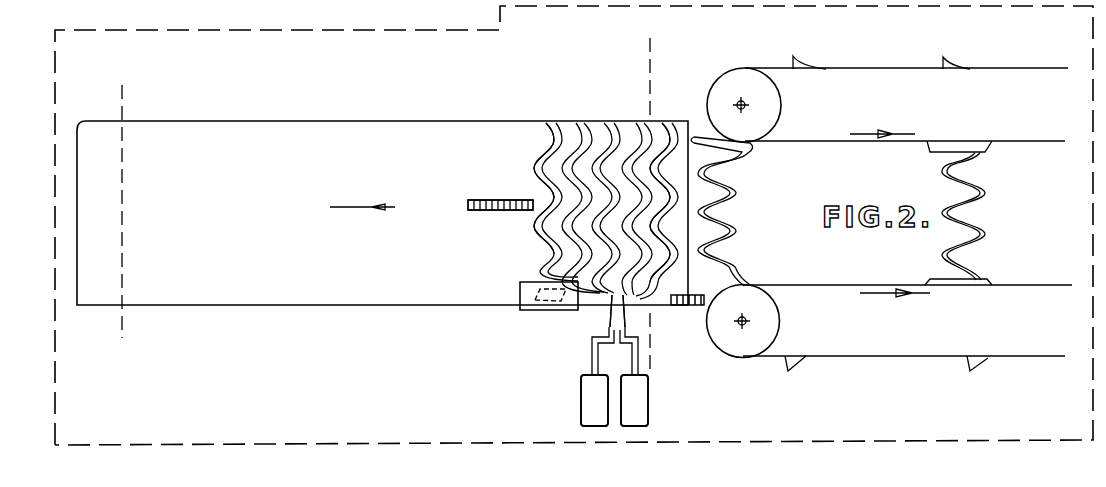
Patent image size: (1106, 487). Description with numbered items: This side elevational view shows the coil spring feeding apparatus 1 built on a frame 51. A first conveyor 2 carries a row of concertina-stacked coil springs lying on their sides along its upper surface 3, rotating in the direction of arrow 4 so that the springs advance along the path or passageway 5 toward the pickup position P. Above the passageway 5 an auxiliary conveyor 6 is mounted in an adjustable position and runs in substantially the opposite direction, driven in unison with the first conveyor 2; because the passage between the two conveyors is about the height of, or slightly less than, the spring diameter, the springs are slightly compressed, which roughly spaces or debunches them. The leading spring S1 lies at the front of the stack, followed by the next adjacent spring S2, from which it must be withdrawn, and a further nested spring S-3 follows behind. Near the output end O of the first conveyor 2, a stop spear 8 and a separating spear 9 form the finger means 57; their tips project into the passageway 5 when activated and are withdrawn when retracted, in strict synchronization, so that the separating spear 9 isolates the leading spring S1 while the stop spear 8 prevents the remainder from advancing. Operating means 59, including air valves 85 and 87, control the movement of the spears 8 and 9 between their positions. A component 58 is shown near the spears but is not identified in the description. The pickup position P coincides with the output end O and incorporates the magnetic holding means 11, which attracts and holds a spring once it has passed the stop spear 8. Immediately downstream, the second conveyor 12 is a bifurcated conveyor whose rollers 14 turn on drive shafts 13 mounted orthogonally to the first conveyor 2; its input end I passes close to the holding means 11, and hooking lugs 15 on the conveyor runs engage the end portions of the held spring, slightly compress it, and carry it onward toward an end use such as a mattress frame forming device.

The apparatus 1 is at (590, 88).
The first conveyor 2 is at (355, 121).
The upper surface 3 is at (455, 215).
The arrow 4 is at (344, 225).
The path or passageway 5 is at (558, 183).
The auxiliary conveyor 6 is at (487, 200).
The stop spear 8 is at (636, 353).
The separating spear 9 is at (588, 356).
The holding means 11 is at (682, 308).
The second conveyor 12 is at (868, 69).
The drive shafts 13 is at (748, 104).
The rollers 14 is at (770, 117).
The hooking lugs 15 is at (805, 62).
The frame 51 is at (283, 445).
The means for delivering the leading coil spring 57 is at (573, 341).
The coupling box 58 is at (530, 310).
The means for sequentially operating the spears 59 is at (566, 400).
The air valve 85 is at (632, 408).
The air valve 87 is at (590, 414).
The leading coil spring S1 is at (650, 264).
The next adjacent spring S2 is at (546, 270).
The strand S-3 is at (732, 218).
The pickup position P is at (707, 45).
The input end I is at (708, 347).
The output end O is at (735, 385).